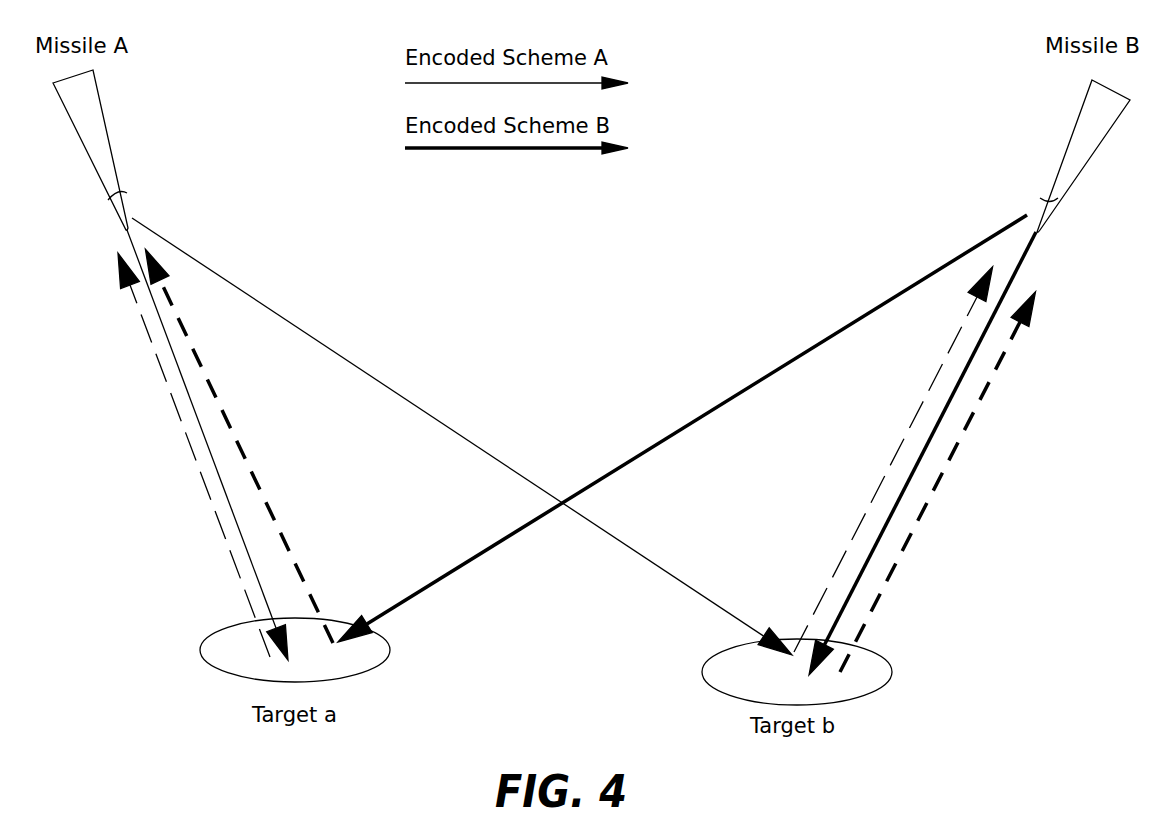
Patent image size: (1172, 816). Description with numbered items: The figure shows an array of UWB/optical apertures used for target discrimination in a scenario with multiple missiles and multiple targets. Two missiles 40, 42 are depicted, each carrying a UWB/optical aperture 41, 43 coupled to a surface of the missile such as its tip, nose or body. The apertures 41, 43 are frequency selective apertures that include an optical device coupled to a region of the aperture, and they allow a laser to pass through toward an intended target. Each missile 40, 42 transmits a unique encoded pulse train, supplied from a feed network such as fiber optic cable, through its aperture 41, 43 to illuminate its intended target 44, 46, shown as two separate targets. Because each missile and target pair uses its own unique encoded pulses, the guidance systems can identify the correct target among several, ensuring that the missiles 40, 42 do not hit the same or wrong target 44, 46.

The missile 40 is at (100, 117).
The UWB/optical aperture 41 is at (128, 203).
The missile 42 is at (1077, 120).
The UWB/optical aperture 43 is at (1043, 212).
The target 44 is at (365, 675).
The target 46 is at (875, 692).